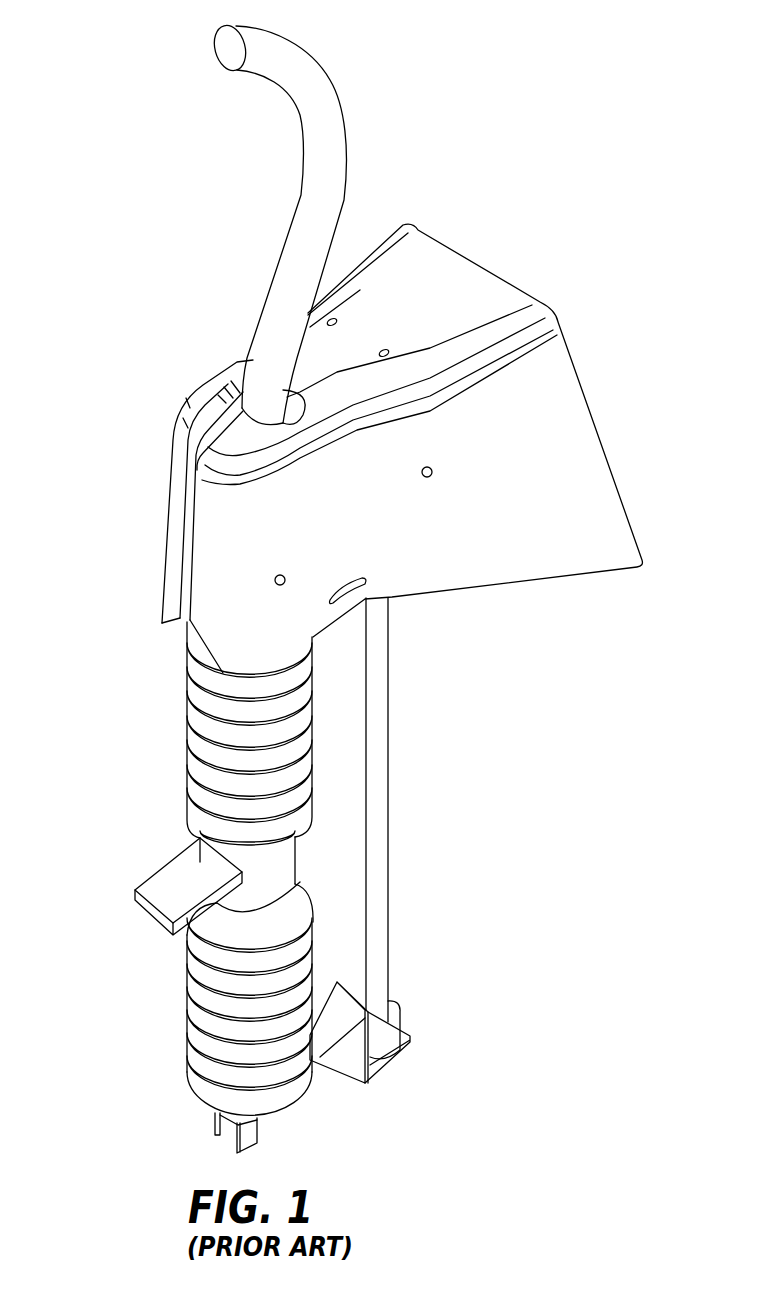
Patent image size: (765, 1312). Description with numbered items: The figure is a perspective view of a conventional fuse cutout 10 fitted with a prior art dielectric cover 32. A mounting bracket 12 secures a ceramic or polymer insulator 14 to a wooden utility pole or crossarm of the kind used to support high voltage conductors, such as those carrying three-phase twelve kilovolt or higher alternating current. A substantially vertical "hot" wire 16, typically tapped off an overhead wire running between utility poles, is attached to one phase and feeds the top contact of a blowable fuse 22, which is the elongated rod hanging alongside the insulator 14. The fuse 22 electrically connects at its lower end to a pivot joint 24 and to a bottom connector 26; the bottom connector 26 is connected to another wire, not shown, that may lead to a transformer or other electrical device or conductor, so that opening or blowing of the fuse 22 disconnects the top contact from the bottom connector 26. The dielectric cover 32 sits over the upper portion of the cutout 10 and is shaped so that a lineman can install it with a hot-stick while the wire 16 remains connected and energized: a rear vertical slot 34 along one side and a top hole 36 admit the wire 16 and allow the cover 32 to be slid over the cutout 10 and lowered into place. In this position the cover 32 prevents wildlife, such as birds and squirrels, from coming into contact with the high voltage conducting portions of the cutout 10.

The fuse cutout 10 is at (112, 196).
The mounting bracket 12 is at (173, 877).
The insulator 14 is at (187, 712).
The wire 16 is at (335, 142).
The fuse 22 is at (390, 807).
The pivot joint 24 is at (397, 1057).
The bottom connector 26 is at (250, 1140).
The dielectric cover 32 is at (480, 295).
The rear vertical slot 34 is at (183, 490).
The top hole 36 is at (243, 368).